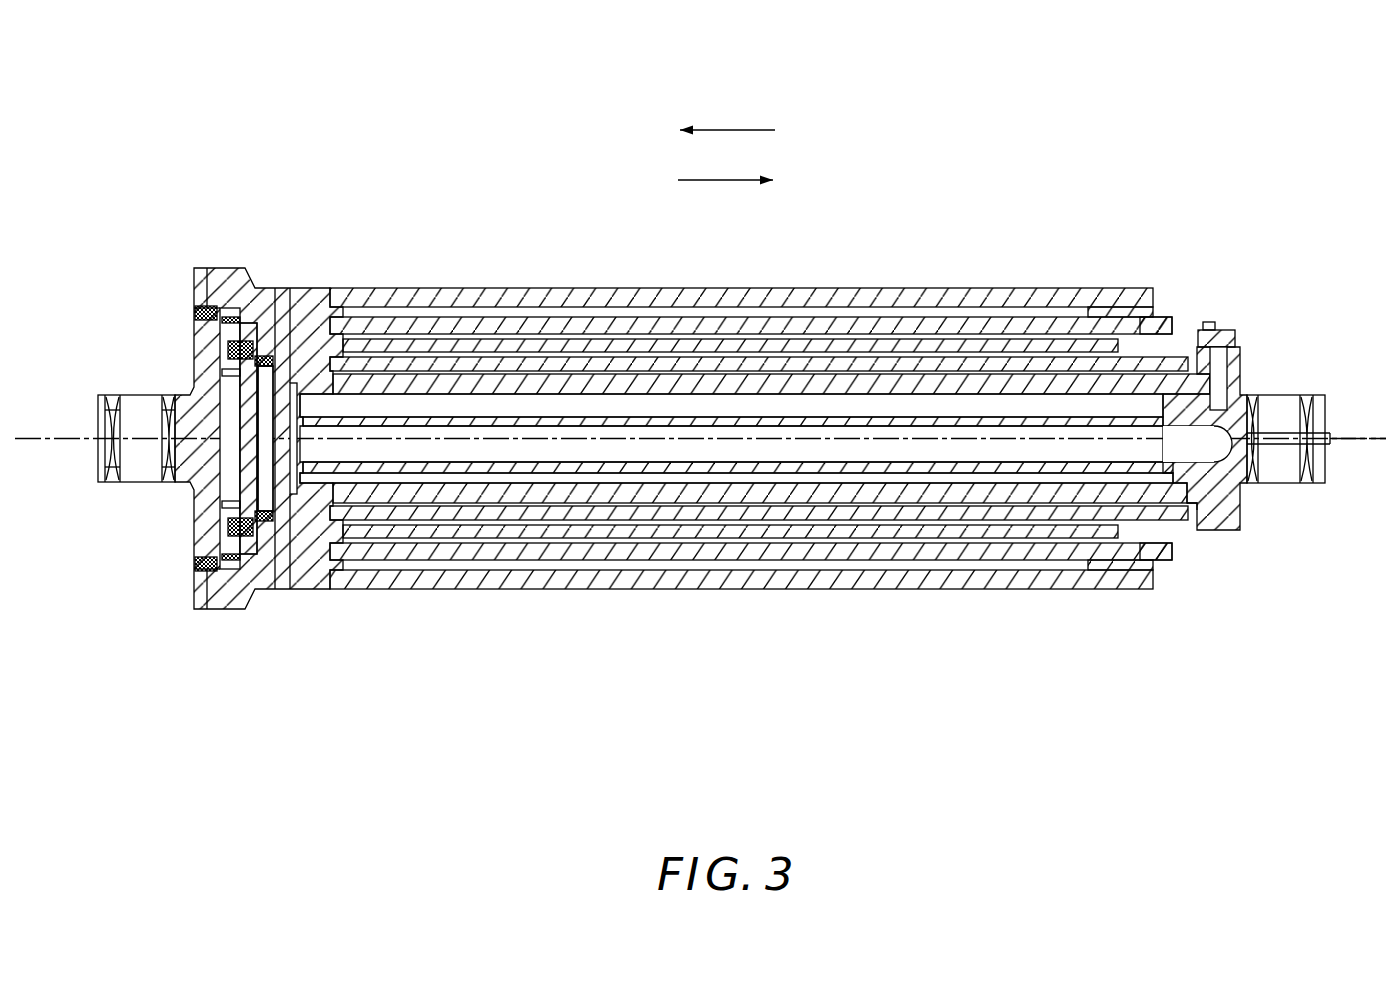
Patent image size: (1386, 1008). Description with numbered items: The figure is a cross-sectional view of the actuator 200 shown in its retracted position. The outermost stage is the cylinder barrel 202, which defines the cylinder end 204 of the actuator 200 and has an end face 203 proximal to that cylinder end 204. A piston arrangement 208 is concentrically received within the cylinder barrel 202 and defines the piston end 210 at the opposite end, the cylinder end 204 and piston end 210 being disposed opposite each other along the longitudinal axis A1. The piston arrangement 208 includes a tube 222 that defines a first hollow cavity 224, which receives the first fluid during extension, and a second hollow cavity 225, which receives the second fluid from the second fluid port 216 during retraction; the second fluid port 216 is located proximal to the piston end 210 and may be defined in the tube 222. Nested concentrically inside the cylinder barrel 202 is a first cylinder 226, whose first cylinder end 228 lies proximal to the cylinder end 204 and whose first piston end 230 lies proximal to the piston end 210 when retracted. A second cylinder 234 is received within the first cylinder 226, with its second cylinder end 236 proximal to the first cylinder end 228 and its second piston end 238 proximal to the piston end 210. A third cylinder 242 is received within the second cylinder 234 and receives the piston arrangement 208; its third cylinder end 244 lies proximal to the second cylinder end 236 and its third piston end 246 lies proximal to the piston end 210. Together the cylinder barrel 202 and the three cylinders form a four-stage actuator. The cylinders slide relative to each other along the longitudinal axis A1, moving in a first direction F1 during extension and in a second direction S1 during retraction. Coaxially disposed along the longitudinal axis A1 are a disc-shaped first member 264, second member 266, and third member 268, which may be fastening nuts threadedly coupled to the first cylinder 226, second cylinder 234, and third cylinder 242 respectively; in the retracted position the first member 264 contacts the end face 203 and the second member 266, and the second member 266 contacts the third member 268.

The actuator 200 is at (1156, 84).
The cylinder barrel 202 is at (332, 290).
The end face 203 is at (282, 291).
The cylinder end 204 is at (77, 408).
The piston arrangement 208 is at (1250, 348).
The piston end 210 is at (1330, 378).
The second fluid port 216 is at (1226, 330).
The tube 222 is at (773, 385).
The first hollow cavity 224 is at (529, 428).
The second hollow cavity 225 is at (611, 396).
The first cylinder 226 is at (418, 318).
The first cylinder end 228 is at (218, 313).
The first piston end 230 is at (1174, 321).
The second cylinder 234 is at (398, 538).
The second cylinder end 236 is at (218, 551).
The second piston end 238 is at (1176, 552).
The third cylinder 242 is at (645, 518).
The third cylinder end 244 is at (250, 350).
The third piston end 246 is at (1196, 511).
The first member 264 is at (230, 520).
The second member 266 is at (248, 556).
The third member 268 is at (266, 522).
The longitudinal axis A1 is at (1362, 432).
The first direction F1 is at (727, 115).
The second direction S1 is at (725, 196).